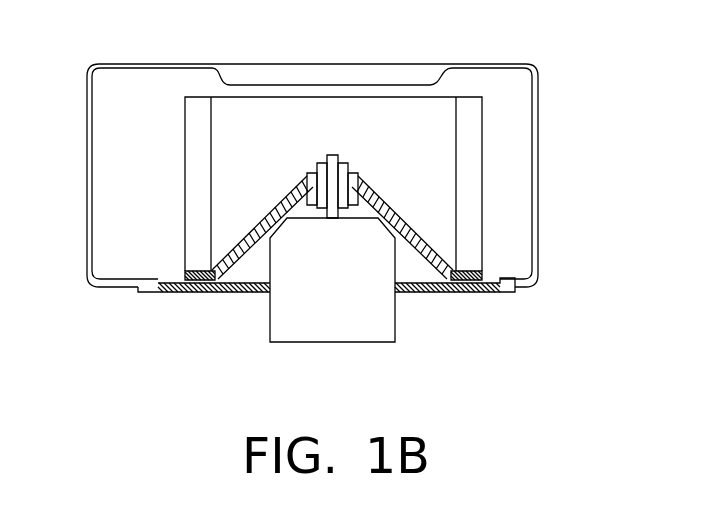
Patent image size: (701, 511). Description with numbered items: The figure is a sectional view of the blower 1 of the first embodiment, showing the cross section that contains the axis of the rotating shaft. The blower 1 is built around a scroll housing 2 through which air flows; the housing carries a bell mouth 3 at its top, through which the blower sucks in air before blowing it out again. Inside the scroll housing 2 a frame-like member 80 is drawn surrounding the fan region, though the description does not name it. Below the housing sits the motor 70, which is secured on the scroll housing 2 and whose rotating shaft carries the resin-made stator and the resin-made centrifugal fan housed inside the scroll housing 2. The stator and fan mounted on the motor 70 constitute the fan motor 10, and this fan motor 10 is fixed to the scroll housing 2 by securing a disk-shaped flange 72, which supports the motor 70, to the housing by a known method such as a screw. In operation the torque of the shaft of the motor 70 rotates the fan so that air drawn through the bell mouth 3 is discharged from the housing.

The blower 1 is at (70, 50).
The scroll housing 2 is at (538, 107).
The bell mouth 3 is at (432, 82).
The fan motor 10 is at (400, 322).
The motor 70 is at (289, 332).
The flange 72 is at (217, 296).
The frame 80 is at (482, 176).